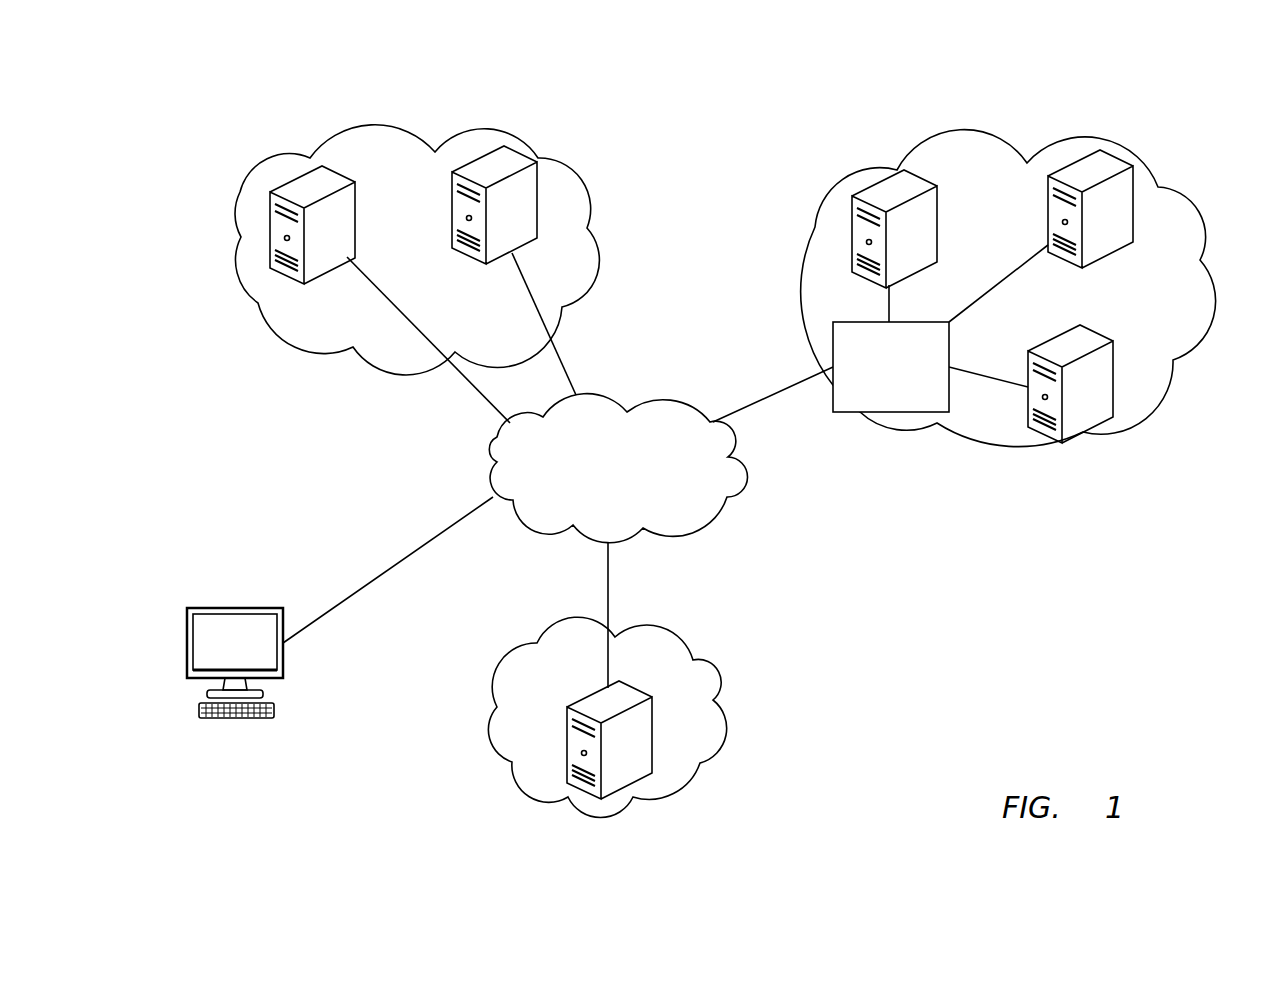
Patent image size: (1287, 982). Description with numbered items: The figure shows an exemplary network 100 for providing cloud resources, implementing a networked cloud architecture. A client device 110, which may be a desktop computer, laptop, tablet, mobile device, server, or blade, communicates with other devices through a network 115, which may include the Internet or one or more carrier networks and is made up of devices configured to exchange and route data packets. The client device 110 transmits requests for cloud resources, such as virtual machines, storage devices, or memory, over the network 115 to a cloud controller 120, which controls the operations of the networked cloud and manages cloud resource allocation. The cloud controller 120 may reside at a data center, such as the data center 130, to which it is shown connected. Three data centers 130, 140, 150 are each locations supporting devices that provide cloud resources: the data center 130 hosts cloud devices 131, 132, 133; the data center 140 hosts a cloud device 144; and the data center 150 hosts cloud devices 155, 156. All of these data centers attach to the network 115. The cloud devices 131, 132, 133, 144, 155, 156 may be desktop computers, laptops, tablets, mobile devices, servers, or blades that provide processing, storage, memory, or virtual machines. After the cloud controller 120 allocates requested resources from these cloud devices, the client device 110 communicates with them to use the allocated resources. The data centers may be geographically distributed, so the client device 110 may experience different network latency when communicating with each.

The network 100 is at (213, 110).
The client device 110 is at (237, 606).
The network 115 is at (676, 397).
The cloud controller 120 is at (843, 413).
The data center 130 is at (1221, 301).
The cloud device 131 is at (938, 218).
The cloud device 132 is at (1118, 153).
The cloud device 133 is at (1098, 330).
The data center 140 is at (729, 727).
The cloud device 144 is at (593, 690).
The data center 150 is at (604, 262).
The cloud device 155 is at (357, 214).
The cloud device 156 is at (522, 153).